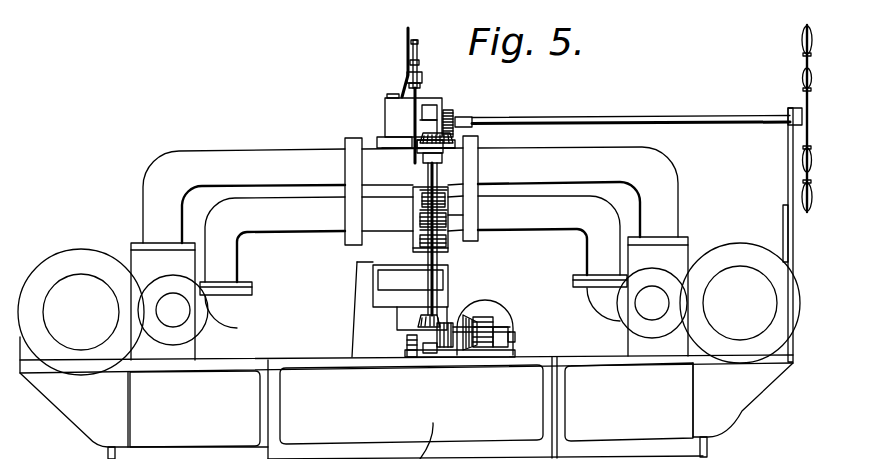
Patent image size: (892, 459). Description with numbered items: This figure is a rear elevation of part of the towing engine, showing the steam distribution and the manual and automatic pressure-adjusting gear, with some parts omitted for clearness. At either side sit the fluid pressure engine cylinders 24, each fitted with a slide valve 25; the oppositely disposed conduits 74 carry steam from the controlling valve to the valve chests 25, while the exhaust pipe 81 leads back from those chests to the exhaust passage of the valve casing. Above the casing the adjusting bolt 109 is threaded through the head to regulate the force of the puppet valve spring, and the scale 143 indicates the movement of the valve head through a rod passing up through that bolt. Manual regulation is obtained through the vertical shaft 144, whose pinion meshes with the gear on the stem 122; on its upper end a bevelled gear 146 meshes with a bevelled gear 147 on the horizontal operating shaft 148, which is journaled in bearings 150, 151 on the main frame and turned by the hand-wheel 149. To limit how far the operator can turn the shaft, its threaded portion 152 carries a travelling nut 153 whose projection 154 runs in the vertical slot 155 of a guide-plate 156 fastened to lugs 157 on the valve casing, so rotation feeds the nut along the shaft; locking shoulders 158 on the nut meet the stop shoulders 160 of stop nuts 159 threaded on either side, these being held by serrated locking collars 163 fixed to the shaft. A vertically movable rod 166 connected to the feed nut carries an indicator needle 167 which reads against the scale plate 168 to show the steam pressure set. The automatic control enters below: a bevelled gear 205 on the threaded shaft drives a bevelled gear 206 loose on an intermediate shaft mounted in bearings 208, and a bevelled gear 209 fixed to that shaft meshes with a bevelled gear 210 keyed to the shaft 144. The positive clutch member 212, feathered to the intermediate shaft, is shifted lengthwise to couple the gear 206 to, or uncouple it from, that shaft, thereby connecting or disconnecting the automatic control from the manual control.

The fluid pressure engine cylinder 24 is at (100, 232).
The slide valve 25 is at (185, 327).
The conduit 74 is at (318, 245).
The exhaust pipe 81 is at (262, 130).
The adjusting bolt 109 is at (416, 76).
The stem 122 is at (408, 355).
The scale 143 is at (405, 31).
The vertical shaft 144 is at (438, 300).
The bevelled gear 146 is at (405, 128).
The bevelled gear 147 is at (455, 105).
The operating shaft 148 is at (622, 107).
The hand-wheel 149 is at (803, 48).
The bearing 150 is at (472, 113).
The bearing 151 is at (790, 108).
The threaded portion 152 is at (447, 207).
The travelling nut 153 is at (447, 222).
The projection 154 is at (497, 218).
The vertical slot 155 is at (422, 243).
The guide-plate 156 is at (423, 185).
The lug 157 is at (415, 197).
The locking shoulder 158 is at (455, 240).
The stop nut 159 is at (450, 197).
The stop shoulder 160 is at (422, 210).
The locking collar 163 is at (447, 200).
The vertically movable rod 166 is at (430, 117).
The indicator needle 167 is at (420, 100).
The scale plate 168 is at (387, 96).
The bevelled gear 205 is at (493, 312).
The bevelled gear 206 is at (472, 352).
The bearing 208 is at (457, 352).
The bevelled gear 209 is at (443, 353).
The bevelled gear 210 is at (420, 322).
The positive clutch member 212 is at (507, 332).